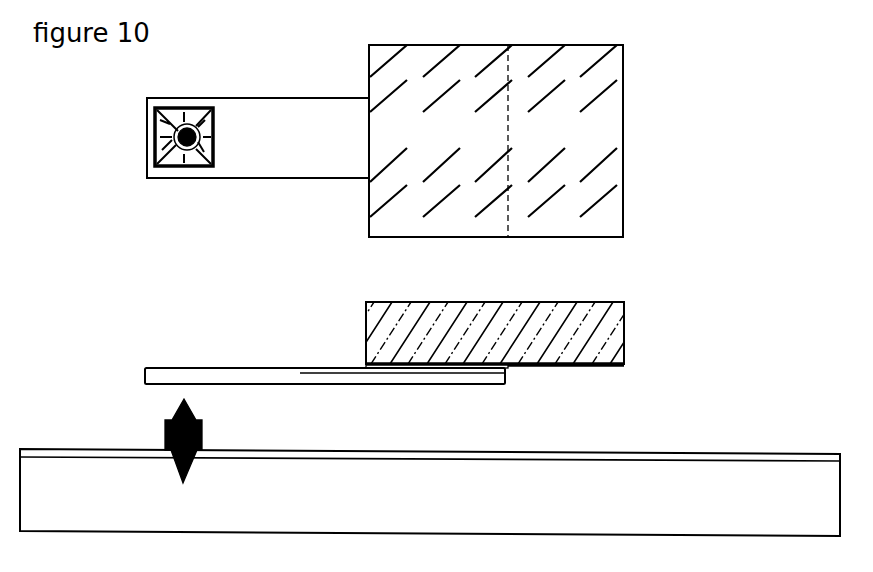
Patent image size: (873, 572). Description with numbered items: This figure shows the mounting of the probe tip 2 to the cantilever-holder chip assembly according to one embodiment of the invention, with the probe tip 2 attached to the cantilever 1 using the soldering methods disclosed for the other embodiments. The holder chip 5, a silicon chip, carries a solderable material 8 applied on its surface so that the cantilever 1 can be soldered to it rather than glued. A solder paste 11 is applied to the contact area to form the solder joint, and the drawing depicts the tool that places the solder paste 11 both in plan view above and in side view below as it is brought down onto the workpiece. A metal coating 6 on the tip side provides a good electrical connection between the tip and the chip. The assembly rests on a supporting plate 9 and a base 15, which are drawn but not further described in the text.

The cantilever 1 is at (330, 377).
The probe tip 2 is at (190, 112).
The holder chip 5 is at (623, 132).
The metal coating 6 is at (398, 384).
The solderable material 8 is at (523, 366).
The plate / substrate 9 is at (270, 385).
The solder paste 11 is at (195, 165).
The base / table 15 is at (430, 492).